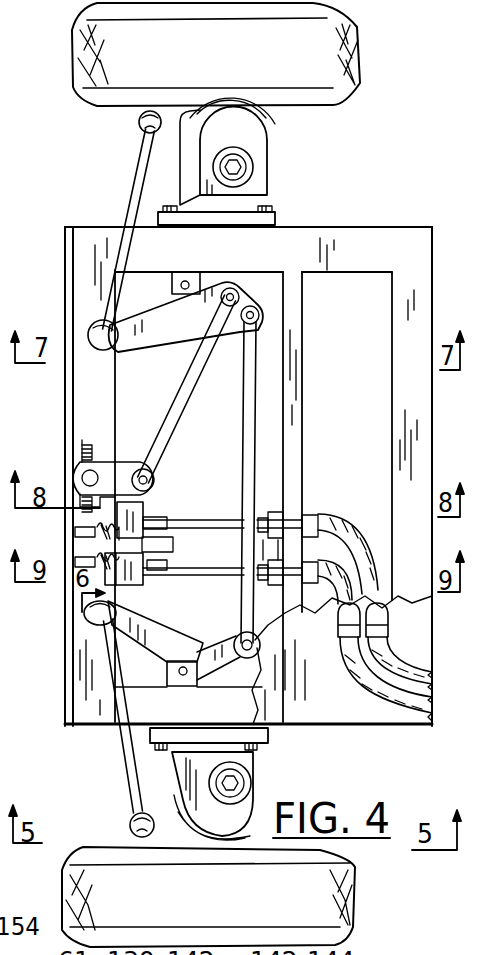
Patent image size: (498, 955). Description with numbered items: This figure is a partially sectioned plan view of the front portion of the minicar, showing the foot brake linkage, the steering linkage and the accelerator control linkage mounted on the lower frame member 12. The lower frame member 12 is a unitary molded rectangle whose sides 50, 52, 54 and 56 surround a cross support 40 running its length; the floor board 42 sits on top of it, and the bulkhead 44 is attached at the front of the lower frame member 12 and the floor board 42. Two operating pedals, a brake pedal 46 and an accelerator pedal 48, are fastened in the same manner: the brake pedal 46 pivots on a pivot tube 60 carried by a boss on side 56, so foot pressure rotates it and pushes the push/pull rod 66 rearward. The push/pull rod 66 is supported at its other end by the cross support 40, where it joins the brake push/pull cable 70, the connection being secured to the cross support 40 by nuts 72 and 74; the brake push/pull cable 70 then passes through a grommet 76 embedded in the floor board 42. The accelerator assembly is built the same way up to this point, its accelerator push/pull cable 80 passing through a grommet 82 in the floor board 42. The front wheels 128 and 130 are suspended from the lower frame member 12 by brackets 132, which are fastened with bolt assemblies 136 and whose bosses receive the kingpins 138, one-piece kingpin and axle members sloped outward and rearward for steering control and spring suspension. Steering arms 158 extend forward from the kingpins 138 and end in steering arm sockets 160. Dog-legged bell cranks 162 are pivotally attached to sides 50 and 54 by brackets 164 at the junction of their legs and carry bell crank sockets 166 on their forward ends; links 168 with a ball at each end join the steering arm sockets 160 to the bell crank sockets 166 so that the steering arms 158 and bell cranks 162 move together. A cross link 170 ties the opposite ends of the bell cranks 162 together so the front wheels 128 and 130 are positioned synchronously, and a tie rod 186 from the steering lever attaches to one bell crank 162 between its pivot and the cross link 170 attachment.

The lower frame member 12 is at (80, 690).
The cross support 40 is at (291, 428).
The floor board 42 is at (378, 723).
The bulkhead 44 is at (66, 427).
The brake pedal 46 is at (135, 585).
The accelerator pedal 48 is at (140, 512).
The side 50 is at (163, 690).
The side 52 is at (400, 432).
The side 54 is at (291, 236).
The side 56 is at (82, 278).
The pivot tube 60 is at (172, 546).
The push/pull rod 66 is at (208, 572).
The brake push/pull cable 70 is at (357, 659).
The nut 72 is at (260, 578).
The nut 74 is at (310, 544).
The grommet 76 is at (343, 620).
The accelerator push/pull cable 80 is at (350, 543).
The grommet 82 is at (376, 614).
The front wheel 128 is at (233, 918).
The front wheel 130 is at (244, 68).
The bracket 132 is at (183, 201).
The bolt assembly 136 is at (170, 208).
The kingpin 138 is at (232, 785).
The steering arm 158 is at (186, 828).
The steering arm socket 160 is at (139, 122).
The bell crank 162 is at (160, 311).
The bracket 164 is at (170, 662).
The bell crank socket 166 is at (85, 620).
The link 168 is at (140, 152).
The cross link 170 is at (249, 479).
The tie rod 186 is at (201, 368).